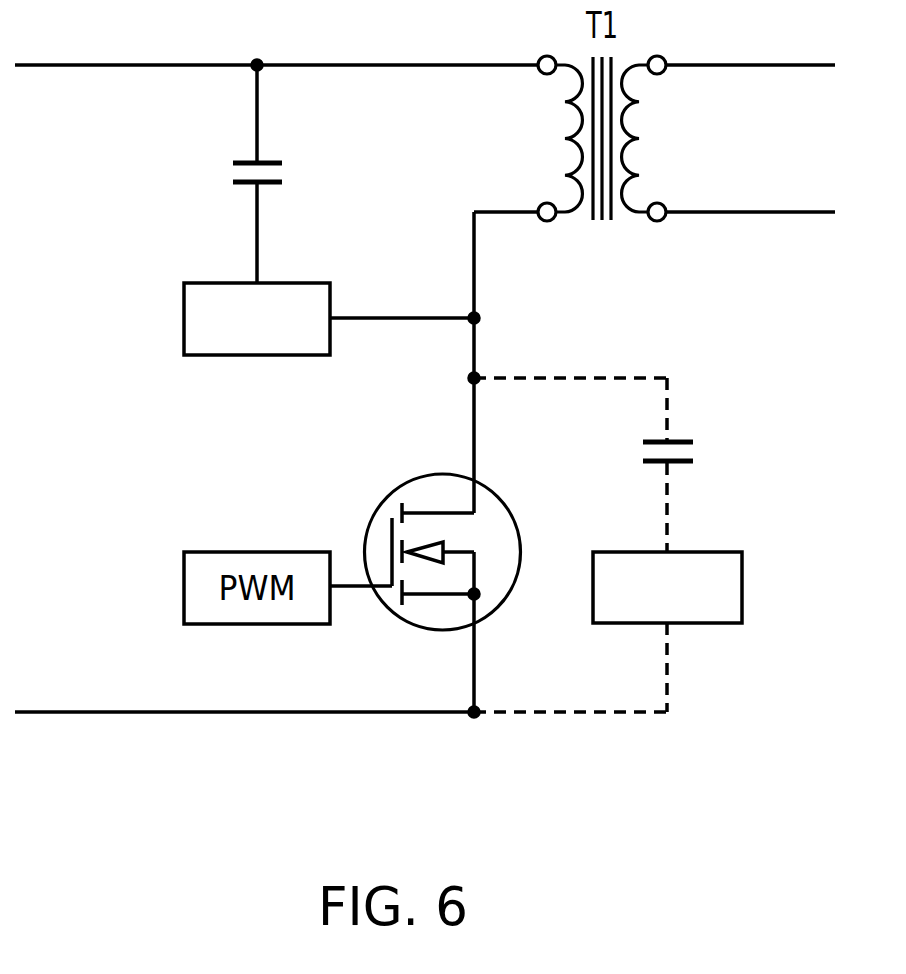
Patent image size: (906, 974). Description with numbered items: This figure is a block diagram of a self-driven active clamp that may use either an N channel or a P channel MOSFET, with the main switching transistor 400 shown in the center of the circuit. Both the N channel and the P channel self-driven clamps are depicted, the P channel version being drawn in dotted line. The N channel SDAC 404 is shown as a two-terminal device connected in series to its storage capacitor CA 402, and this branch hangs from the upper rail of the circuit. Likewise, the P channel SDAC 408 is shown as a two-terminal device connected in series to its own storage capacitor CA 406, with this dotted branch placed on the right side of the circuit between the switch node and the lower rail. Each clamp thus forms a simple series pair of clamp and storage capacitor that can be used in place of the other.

The MOSFET switching transistor 400 is at (416, 478).
The storage capacitor CA 402 is at (233, 161).
The N channel SDAC 404 is at (233, 283).
The storage capacitor CA 406 is at (688, 432).
The P channel SDAC 408 is at (688, 553).